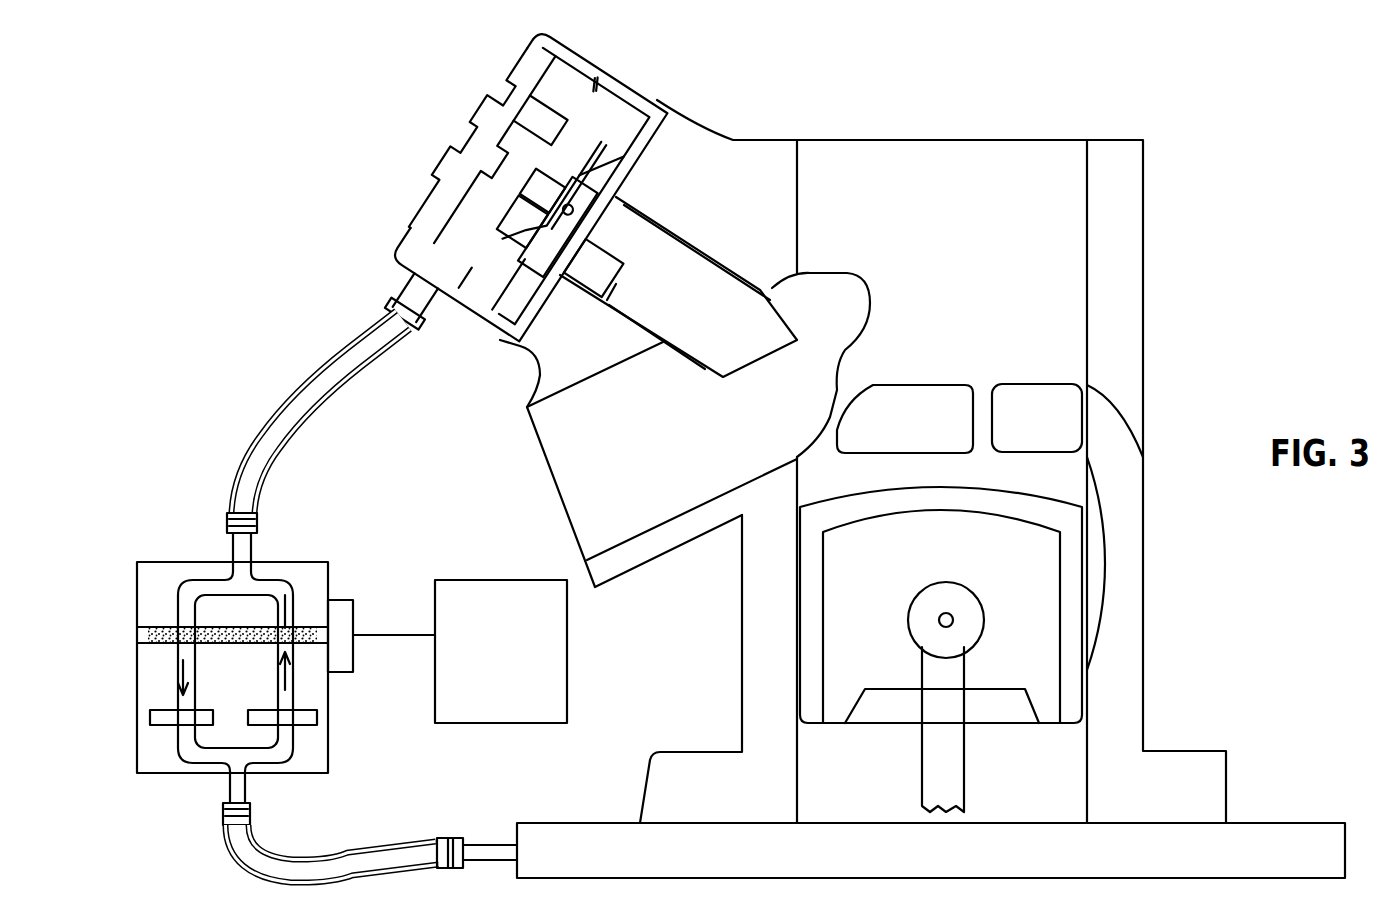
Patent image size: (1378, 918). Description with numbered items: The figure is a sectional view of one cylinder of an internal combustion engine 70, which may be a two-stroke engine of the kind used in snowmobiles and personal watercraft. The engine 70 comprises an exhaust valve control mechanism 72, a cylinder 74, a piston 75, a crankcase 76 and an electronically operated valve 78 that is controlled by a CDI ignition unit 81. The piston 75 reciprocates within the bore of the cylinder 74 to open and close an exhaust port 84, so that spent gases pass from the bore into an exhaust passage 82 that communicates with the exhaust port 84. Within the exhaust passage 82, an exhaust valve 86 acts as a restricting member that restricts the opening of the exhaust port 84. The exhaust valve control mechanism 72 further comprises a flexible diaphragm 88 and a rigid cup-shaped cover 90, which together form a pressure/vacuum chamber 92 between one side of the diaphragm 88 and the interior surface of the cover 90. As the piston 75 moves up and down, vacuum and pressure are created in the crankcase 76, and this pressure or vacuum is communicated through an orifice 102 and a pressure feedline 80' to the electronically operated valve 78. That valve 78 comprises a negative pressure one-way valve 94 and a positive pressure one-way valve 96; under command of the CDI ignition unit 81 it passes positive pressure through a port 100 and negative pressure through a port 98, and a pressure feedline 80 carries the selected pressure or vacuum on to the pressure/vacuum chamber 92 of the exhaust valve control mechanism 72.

The internal combustion engine 70 is at (253, 168).
The exhaust valve control mechanism 72 is at (657, 79).
The cylinder 74 is at (1112, 148).
The piston 75 is at (1033, 510).
The crankcase 76 is at (1033, 862).
The electronically operated valve 78 is at (172, 565).
The pressure feedline 80 is at (315, 426).
The pressure feedline 80' is at (350, 840).
The CDI ignition unit 81 is at (567, 675).
The exhaust passage 82 is at (570, 493).
The exhaust port 84 is at (841, 290).
The exhaust valve 86 is at (677, 284).
The flexible diaphragm 88 is at (652, 100).
The rigid cup-shaped cover 90 is at (413, 224).
The pressure/vacuum chamber 92 is at (547, 87).
The negative pressure one-way valve 94 is at (150, 717).
The positive pressure one-way valve 96 is at (317, 717).
The port 98 is at (170, 632).
The port 100 is at (285, 628).
The orifice 102 is at (527, 850).